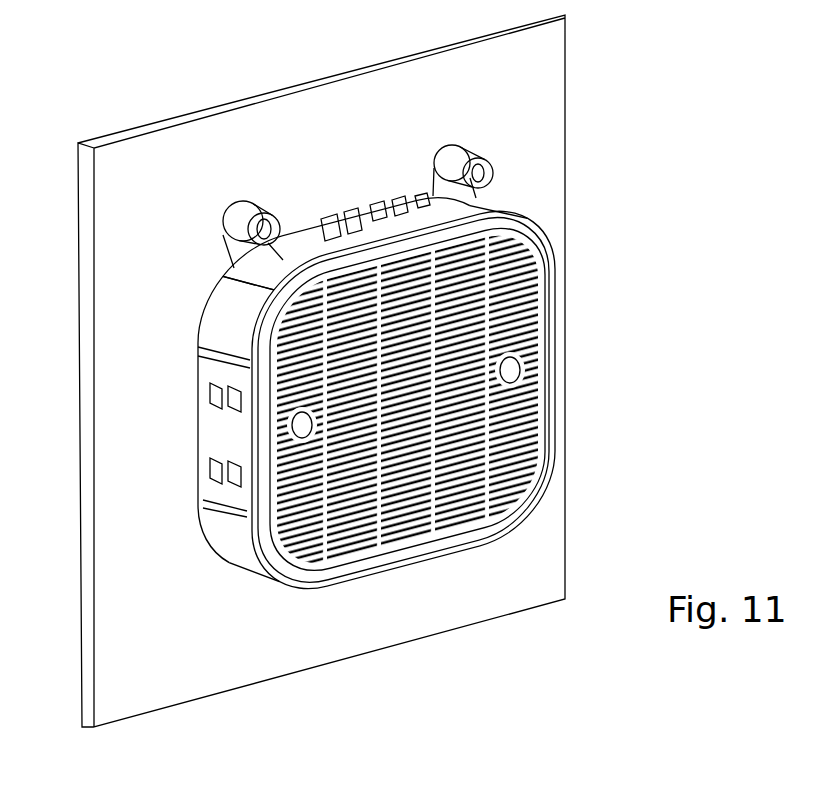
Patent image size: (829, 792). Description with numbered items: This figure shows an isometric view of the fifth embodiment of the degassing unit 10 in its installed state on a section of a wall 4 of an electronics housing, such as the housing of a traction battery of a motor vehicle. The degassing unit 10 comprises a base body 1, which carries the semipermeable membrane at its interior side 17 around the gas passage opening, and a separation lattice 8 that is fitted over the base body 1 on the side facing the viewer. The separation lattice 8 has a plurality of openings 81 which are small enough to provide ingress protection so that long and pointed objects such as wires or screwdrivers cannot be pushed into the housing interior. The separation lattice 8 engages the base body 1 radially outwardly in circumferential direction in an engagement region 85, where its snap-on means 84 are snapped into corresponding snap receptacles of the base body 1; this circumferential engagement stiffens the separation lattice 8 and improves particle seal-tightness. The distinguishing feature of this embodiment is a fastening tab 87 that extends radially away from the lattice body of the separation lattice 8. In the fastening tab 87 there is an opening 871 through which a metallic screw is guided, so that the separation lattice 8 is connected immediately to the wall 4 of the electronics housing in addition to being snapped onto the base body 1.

The base body 1 is at (208, 526).
The wall 4 is at (549, 489).
The separation lattice 8 is at (531, 226).
The degassing unit 10 is at (606, 194).
The interior side 17 is at (614, 390).
The openings 81 is at (535, 270).
The snap-on means 84 is at (349, 207).
The engagement region 85 is at (302, 250).
The fastening tab 87 is at (222, 243).
The opening 871 is at (236, 257).